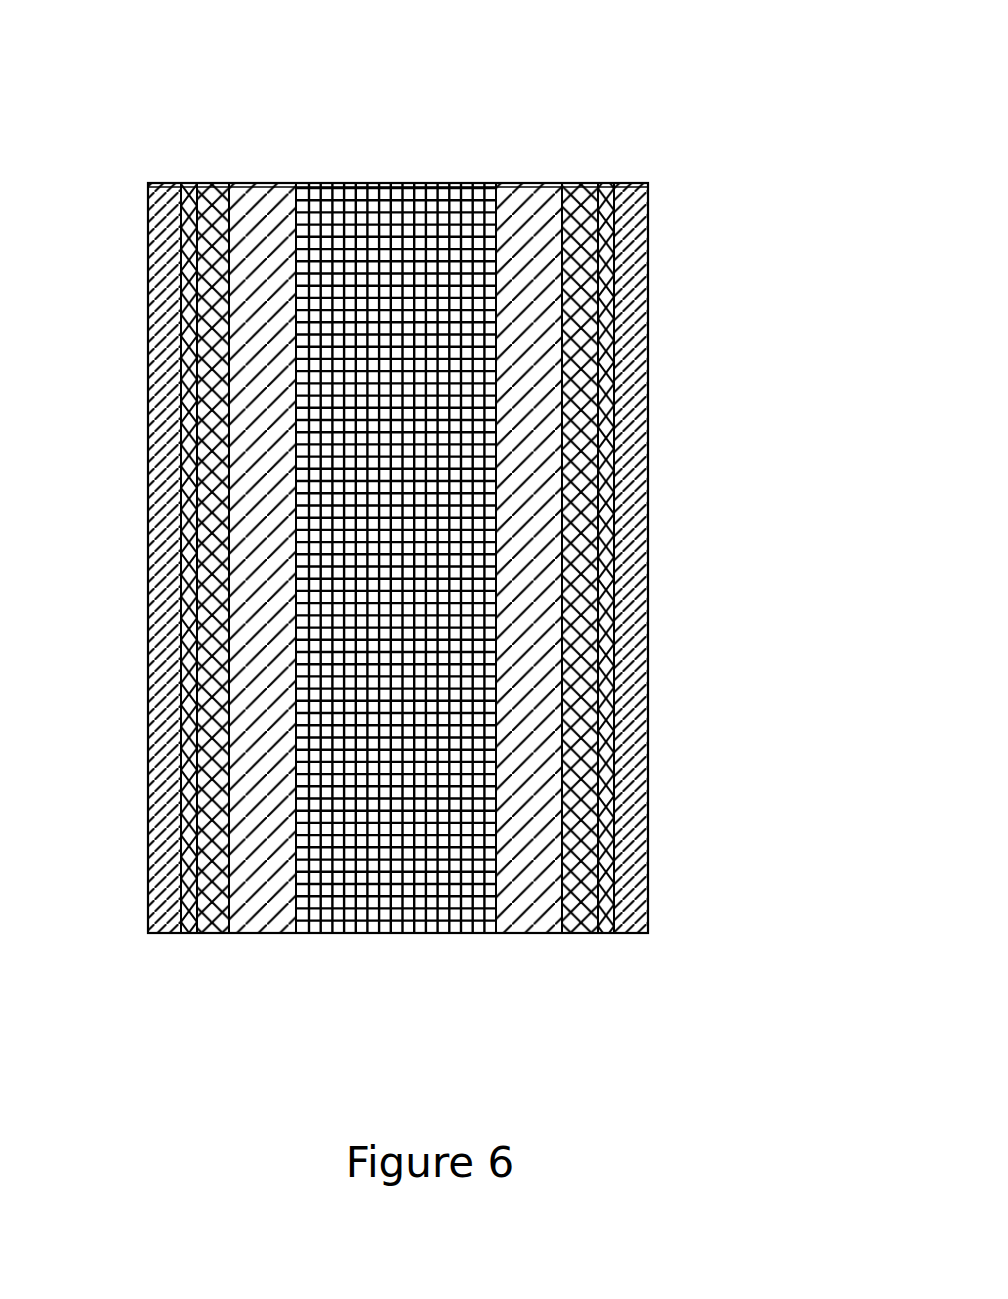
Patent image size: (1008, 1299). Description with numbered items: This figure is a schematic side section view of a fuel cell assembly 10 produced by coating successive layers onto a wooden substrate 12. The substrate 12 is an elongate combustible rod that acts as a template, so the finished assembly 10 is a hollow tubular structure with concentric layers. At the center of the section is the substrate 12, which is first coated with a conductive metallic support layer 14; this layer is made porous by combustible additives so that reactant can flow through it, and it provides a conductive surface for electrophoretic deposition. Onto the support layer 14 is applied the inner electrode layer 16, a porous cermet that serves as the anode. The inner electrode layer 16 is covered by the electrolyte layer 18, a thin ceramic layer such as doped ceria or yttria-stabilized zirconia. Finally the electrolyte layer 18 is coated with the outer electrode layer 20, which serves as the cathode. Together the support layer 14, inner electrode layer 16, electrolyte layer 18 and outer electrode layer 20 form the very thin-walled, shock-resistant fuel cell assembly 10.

The fuel cell assembly 10 is at (673, 432).
The wooden substrate 12 is at (372, 213).
The conductive metallic support layer 14 is at (262, 220).
The inner electrode layer 16 is at (207, 933).
The electrolyte layer 18 is at (190, 933).
The outer electrode layer 20 is at (153, 933).